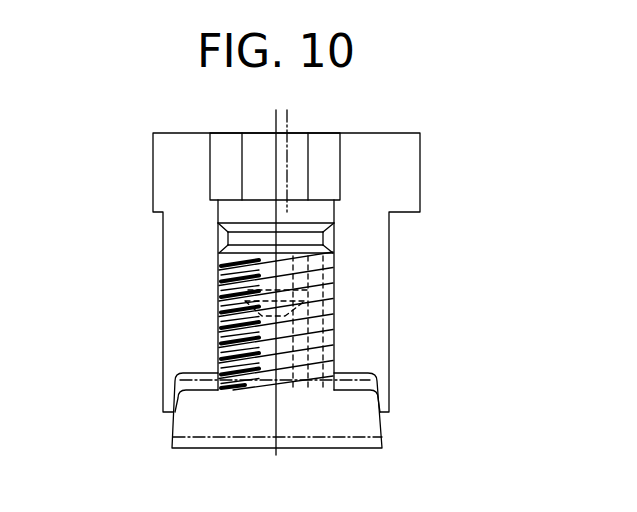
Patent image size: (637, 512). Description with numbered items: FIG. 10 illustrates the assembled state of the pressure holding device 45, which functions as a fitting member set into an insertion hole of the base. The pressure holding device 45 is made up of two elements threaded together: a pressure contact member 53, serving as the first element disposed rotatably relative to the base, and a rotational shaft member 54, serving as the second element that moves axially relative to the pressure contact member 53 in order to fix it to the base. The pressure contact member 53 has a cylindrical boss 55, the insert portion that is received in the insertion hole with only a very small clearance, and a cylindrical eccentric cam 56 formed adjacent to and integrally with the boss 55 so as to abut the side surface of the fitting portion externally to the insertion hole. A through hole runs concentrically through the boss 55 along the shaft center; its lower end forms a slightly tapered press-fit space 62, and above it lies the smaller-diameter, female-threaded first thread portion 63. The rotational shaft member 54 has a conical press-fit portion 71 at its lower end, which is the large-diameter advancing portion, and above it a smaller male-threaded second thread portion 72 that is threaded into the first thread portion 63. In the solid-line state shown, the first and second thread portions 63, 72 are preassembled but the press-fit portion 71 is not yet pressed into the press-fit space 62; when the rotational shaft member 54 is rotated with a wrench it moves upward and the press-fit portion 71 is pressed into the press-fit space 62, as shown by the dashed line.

The pressure holding device 45 is at (135, 183).
The pressure contact member 53 is at (523, 152).
The boss 55 is at (372, 258).
The eccentric cam 56 is at (402, 172).
The press-fit space 62 is at (368, 372).
The first thread portion 63 is at (217, 283).
The press-fit portion 71 is at (193, 408).
The second thread portion 72 is at (217, 325).
The rotational shaft member 54 is at (58, 333).